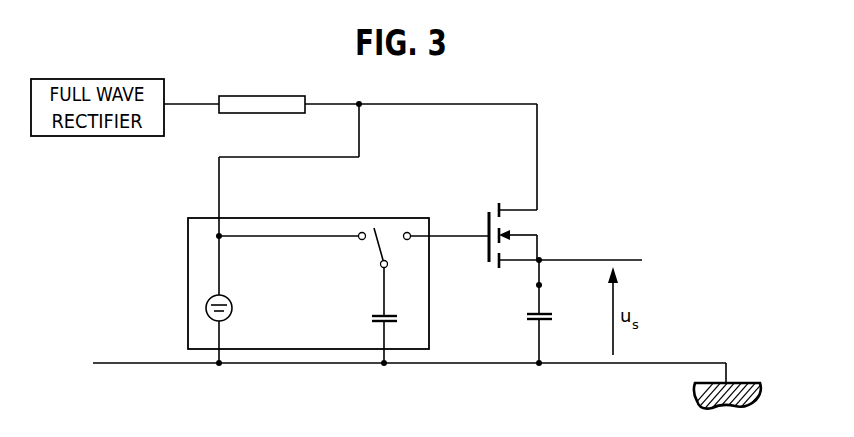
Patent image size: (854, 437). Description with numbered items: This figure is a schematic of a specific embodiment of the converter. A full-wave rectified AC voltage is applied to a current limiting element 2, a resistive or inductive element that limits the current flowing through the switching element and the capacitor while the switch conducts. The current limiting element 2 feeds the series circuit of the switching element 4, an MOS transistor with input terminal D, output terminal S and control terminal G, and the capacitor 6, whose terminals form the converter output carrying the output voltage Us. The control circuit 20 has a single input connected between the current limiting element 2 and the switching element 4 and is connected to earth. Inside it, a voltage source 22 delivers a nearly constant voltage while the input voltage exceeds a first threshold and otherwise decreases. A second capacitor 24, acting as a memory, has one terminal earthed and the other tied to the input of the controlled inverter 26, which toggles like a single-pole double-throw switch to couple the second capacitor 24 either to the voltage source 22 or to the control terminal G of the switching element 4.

The current limiting element 2 is at (276, 96).
The switching element 4 is at (543, 223).
The capacitor 6 is at (530, 322).
The control circuit 20 is at (166, 262).
The voltage source 22 is at (233, 302).
The second capacitor 24 is at (378, 321).
The controlled inverter 26 is at (375, 248).